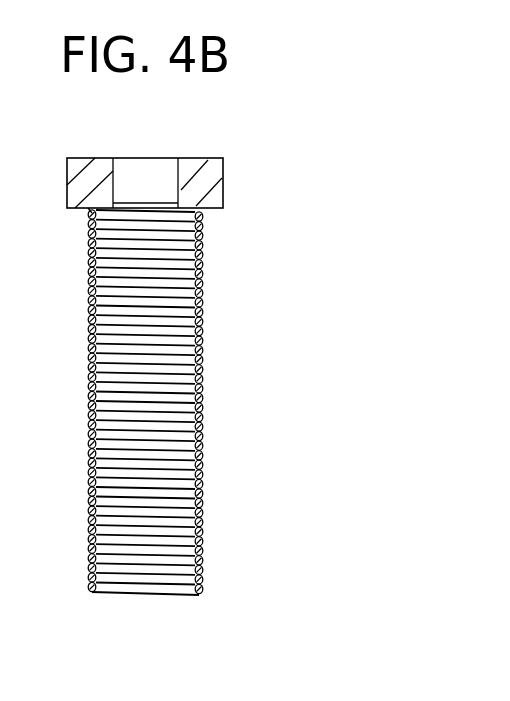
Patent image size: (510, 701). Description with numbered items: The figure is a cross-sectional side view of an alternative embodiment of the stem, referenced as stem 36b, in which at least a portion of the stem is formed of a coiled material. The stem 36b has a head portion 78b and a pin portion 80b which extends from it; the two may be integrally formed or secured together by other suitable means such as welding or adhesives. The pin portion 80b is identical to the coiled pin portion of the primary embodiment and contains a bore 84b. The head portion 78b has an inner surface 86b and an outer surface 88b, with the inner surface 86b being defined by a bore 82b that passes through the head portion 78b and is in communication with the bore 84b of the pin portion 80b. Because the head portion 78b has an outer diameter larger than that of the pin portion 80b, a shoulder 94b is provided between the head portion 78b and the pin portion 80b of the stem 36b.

The stem 36b is at (266, 277).
The head portion 78b is at (224, 183).
The pin portion 80b is at (205, 363).
The bore 82b is at (156, 178).
The bore 84b is at (171, 580).
The inner surface 86b is at (114, 183).
The outer surface 88b is at (67, 182).
The shoulder 94b is at (82, 210).